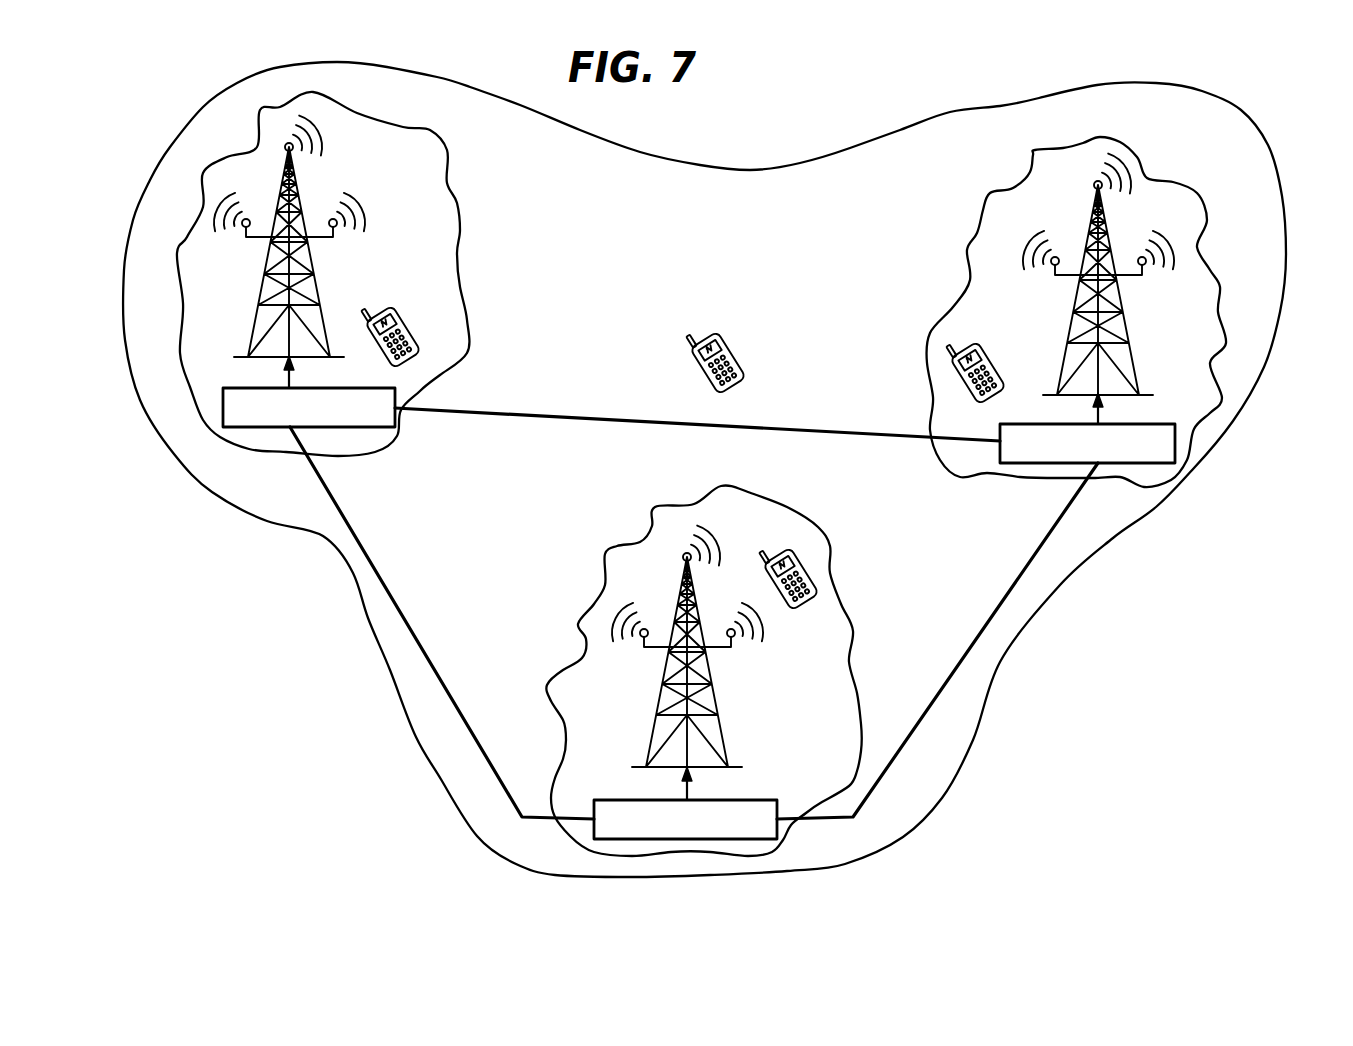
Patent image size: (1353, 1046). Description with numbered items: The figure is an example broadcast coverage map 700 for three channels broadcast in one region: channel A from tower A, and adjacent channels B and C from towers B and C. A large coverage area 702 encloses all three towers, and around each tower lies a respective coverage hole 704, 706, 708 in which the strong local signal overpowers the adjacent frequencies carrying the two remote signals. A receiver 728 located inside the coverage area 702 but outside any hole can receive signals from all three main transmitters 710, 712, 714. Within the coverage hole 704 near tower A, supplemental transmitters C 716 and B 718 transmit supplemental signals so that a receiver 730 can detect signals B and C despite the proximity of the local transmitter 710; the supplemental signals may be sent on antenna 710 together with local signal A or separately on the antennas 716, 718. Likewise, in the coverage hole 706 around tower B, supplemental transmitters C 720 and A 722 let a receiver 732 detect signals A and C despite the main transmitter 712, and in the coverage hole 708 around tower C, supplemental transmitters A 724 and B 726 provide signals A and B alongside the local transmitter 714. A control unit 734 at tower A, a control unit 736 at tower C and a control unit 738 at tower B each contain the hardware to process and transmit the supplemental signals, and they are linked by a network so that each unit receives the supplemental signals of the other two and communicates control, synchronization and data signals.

The broadcast coverage map 700 is at (1280, 118).
The coverage area 702 is at (768, 169).
The coverage hole 704 is at (458, 184).
The coverage hole 706 is at (985, 207).
The coverage hole 708 is at (578, 632).
The main transmitter 710 is at (288, 143).
The main transmitter 712 is at (1097, 181).
The main transmitter 714 is at (685, 553).
The supplemental transmitter C 716 is at (230, 265).
The supplemental transmitter B 718 is at (350, 255).
The supplemental transmitter C 720 is at (1038, 300).
The supplemental transmitter A 722 is at (1157, 316).
The supplemental transmitter A 724 is at (626, 685).
The supplemental transmitter B 726 is at (757, 667).
The receiver 728 is at (720, 333).
The receiver 730 is at (410, 326).
The receiver 732 is at (953, 369).
The control unit 734 is at (234, 388).
The control unit 736 is at (742, 800).
The control unit 738 is at (1140, 424).